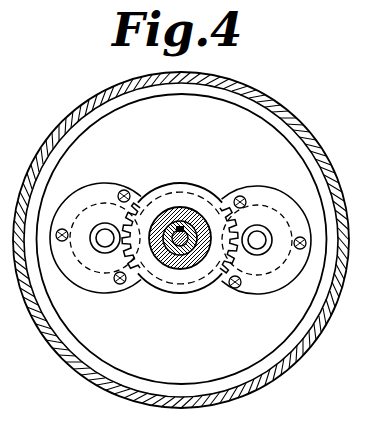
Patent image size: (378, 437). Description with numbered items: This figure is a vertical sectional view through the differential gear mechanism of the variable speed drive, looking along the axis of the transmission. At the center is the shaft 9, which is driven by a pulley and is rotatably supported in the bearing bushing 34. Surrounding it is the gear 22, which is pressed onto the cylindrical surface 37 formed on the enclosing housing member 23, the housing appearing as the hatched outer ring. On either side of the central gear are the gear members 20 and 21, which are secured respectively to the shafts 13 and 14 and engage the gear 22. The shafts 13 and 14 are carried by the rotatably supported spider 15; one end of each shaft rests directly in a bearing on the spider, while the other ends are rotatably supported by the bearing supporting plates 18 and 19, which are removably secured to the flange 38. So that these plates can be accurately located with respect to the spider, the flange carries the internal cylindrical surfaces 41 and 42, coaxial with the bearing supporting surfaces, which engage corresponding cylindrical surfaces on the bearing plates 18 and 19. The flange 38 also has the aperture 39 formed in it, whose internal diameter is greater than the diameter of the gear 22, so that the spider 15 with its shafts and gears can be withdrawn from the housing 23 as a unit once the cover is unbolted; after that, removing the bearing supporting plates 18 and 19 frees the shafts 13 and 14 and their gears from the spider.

The housing member 23 is at (293, 125).
The spider 15 is at (292, 145).
The flange 38 is at (170, 145).
The gear member 20 is at (120, 222).
The bearing supporting plate 18 is at (107, 183).
The aperture 39 is at (170, 187).
The shaft 9 is at (185, 208).
The bearing bushing 34 is at (210, 193).
The bearing supporting plate 19 is at (245, 199).
The gear member 21 is at (274, 212).
The shaft 13 is at (101, 243).
The internal cylindrical surface 41 is at (118, 283).
The gear 22 is at (140, 282).
The cylindrical surface 37 is at (174, 262).
The internal cylindrical surface 42 is at (238, 287).
The shaft 14 is at (258, 246).